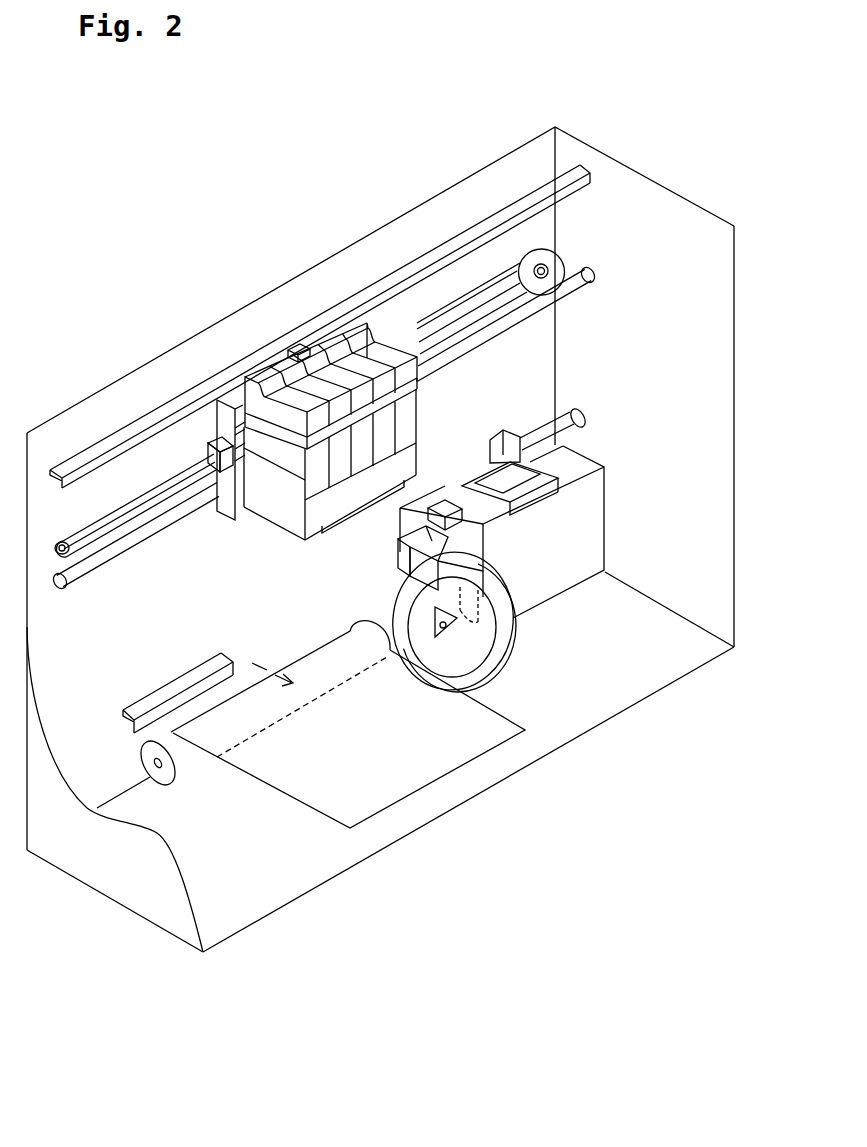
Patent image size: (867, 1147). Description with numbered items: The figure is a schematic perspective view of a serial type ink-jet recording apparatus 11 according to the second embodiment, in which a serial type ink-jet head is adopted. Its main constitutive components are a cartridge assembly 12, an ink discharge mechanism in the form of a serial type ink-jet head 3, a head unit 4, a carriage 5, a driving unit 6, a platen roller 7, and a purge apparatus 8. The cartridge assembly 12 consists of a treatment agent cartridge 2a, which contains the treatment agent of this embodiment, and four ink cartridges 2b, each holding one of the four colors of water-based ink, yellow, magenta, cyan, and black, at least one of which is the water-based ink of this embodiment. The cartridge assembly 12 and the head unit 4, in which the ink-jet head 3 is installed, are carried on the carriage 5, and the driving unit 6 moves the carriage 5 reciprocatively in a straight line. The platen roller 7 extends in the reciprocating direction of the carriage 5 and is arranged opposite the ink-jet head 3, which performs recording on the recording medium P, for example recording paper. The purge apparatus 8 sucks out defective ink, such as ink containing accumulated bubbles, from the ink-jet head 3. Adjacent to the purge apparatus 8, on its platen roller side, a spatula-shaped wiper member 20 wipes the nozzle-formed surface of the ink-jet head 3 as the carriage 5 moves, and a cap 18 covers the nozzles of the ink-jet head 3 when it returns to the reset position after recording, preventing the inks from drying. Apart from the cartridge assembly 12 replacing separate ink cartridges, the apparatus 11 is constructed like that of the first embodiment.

The serial type ink-jet recording apparatus 11 is at (285, 157).
The cartridge assembly 12 is at (292, 325).
The treatment agent cartridge 2a is at (265, 395).
The ink cartridge 2b is at (357, 318).
The ink discharge mechanism (serial type ink-jet head) 3 is at (368, 513).
The head unit 4 is at (344, 543).
The carriage 5 is at (225, 413).
The driving unit 6 is at (578, 153).
The platen roller 7 is at (190, 757).
The purge apparatus 8 is at (649, 556).
The cap 18 is at (540, 465).
The wiper member 20 is at (428, 552).
The recording medium (recording paper) P is at (338, 807).